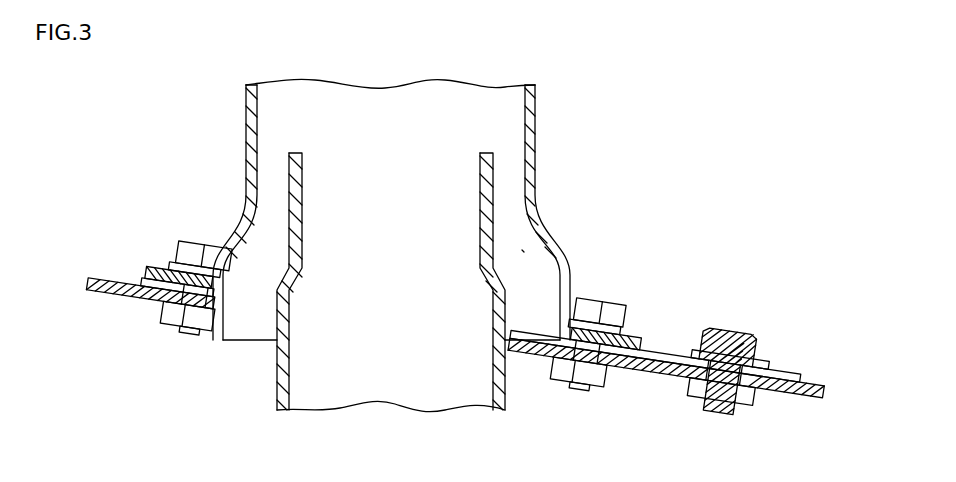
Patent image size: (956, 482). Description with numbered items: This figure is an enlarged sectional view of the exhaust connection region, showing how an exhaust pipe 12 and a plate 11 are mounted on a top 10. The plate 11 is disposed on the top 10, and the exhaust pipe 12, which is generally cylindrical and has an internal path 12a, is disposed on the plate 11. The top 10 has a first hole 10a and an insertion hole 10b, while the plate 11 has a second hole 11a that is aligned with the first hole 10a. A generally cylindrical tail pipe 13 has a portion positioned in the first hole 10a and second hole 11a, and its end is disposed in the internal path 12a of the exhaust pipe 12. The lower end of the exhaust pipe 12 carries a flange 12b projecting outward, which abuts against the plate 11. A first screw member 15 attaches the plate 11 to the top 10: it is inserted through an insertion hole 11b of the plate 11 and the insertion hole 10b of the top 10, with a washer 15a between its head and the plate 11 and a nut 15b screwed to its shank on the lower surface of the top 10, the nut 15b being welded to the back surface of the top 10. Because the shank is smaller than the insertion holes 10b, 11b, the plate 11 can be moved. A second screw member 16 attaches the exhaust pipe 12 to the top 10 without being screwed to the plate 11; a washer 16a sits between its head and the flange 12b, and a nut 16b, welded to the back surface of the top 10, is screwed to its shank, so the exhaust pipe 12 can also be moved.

The top 10 is at (104, 282).
The first hole 10a is at (206, 300).
The insertion hole 10b is at (735, 400).
The plate 11 is at (142, 283).
The second hole 11a is at (214, 292).
The insertion hole 11b is at (708, 400).
The exhaust pipe 12 is at (250, 110).
The internal path 12a is at (522, 250).
The flange 12b is at (139, 272).
The tail pipe 13 is at (291, 165).
The first screw member 15 is at (726, 335).
The washer 15a is at (762, 362).
The nut 15b is at (690, 398).
The second screw member 16 is at (206, 246).
The washer 16a is at (166, 262).
The nut 16b is at (188, 326).